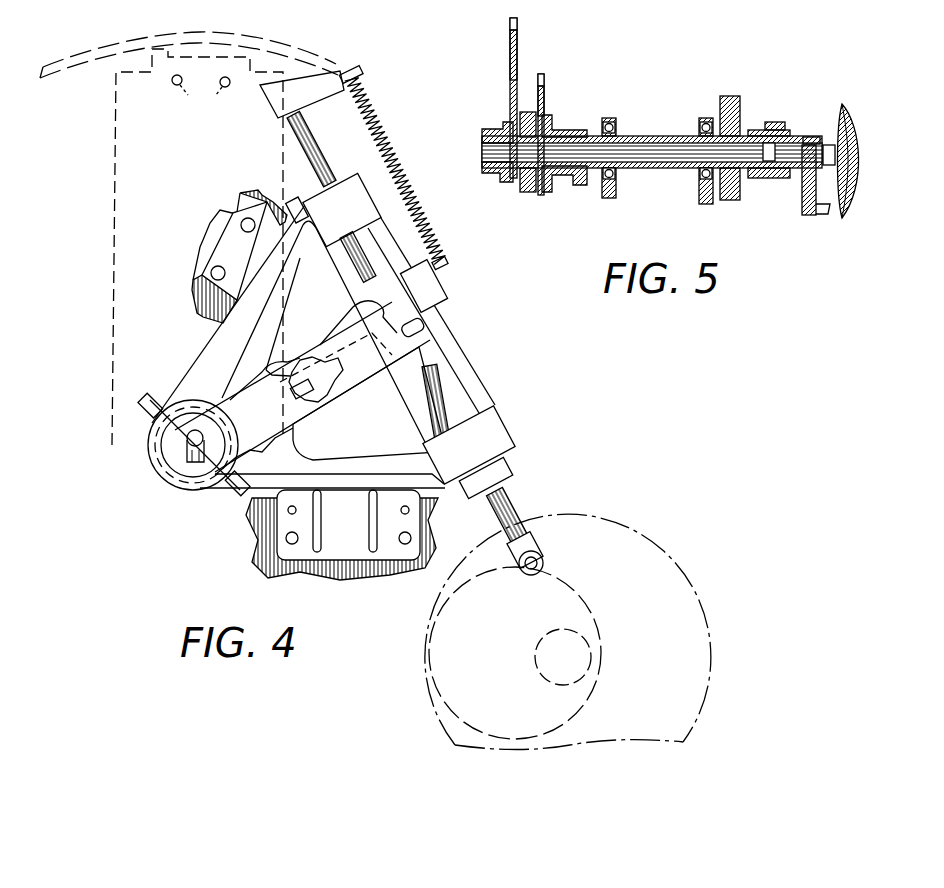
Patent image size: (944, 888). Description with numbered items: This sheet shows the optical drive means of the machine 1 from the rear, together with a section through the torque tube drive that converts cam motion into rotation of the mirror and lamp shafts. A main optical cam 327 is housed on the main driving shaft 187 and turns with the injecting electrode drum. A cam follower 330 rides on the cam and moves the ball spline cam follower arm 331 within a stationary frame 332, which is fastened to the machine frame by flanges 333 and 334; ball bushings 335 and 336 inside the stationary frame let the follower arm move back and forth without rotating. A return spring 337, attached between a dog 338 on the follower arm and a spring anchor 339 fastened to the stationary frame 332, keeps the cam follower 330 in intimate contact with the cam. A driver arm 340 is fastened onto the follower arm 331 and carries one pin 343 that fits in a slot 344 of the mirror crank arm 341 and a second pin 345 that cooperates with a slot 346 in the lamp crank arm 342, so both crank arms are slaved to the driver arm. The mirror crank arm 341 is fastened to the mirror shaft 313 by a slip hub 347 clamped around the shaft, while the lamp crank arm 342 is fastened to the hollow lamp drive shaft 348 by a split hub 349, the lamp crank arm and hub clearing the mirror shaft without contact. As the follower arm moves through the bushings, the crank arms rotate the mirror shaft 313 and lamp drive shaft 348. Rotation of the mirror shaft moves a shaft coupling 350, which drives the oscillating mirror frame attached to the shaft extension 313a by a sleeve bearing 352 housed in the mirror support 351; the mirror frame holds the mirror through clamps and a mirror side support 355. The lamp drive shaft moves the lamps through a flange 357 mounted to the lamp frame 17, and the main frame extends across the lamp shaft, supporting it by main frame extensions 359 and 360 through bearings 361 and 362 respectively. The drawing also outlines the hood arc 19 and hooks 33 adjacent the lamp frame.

In FIG. 4, the mower/vehicle 1 is at (738, 591).
In FIG. 4, the lamp frame 17 is at (114, 170).
In FIG. 5, the lamp frame 17 is at (731, 200).
In FIG. 4, the hood arc 19 is at (142, 38).
In FIG. 4, the hooks 33 is at (201, 94).
In FIG. 4, the main driving shaft 187 is at (594, 650).
In FIG. 4, the mirror shaft 313 is at (170, 465).
In FIG. 5, the mirror shaft 313 is at (484, 146).
In FIG. 5, the shaft extension 313a is at (790, 152).
In FIG. 4, the main optical cam 327 is at (548, 722).
In FIG. 4, the cam follower 330 is at (540, 568).
In FIG. 4, the ball spline cam follower arm 331 is at (505, 504).
In FIG. 4, the stationary frame 332 is at (482, 440).
In FIG. 5, the stationary frame 332 is at (528, 186).
In FIG. 4, the flange 333 is at (205, 262).
In FIG. 4, the flange 334 is at (352, 555).
In FIG. 4, the ball bushing 335 is at (500, 474).
In FIG. 4, the ball bushing 336 is at (342, 180).
In FIG. 4, the return spring 337 is at (368, 112).
In FIG. 4, the dog 338 is at (326, 86).
In FIG. 4, the spring anchor 339 is at (443, 285).
In FIG. 4, the driver arm 340 is at (367, 390).
In FIG. 4, the mirror crank arm 341 is at (350, 340).
In FIG. 5, the mirror crank arm 341 is at (518, 50).
In FIG. 4, the lamp crank arm 342 is at (262, 378).
In FIG. 5, the lamp crank arm 342 is at (544, 102).
In FIG. 4, the pin 343 is at (440, 322).
In FIG. 4, the slot 344 is at (376, 304).
In FIG. 5, the slot 344 is at (518, 24).
In FIG. 4, the second pin 345 is at (308, 398).
In FIG. 4, the slot 346 is at (326, 368).
In FIG. 5, the slot 346 is at (544, 78).
In FIG. 4, the slip hub 347 is at (182, 476).
In FIG. 5, the slip hub 347 is at (486, 174).
In FIG. 5, the hollow lamp drive shaft 348 is at (690, 168).
In FIG. 5, the split hub 349 is at (578, 192).
In FIG. 5, the shaft coupling 350 is at (770, 126).
In FIG. 5, the mirror support 351 is at (804, 212).
In FIG. 5, the sleeve bearing 352 is at (770, 178).
In FIG. 5, the mirror side support 355 is at (842, 122).
In FIG. 5, the flange 357 is at (728, 120).
In FIG. 5, the main frame extension 359 is at (608, 198).
In FIG. 5, the main frame extension 360 is at (708, 204).
In FIG. 5, the bearing 361 is at (616, 128).
In FIG. 5, the bearing 362 is at (700, 124).